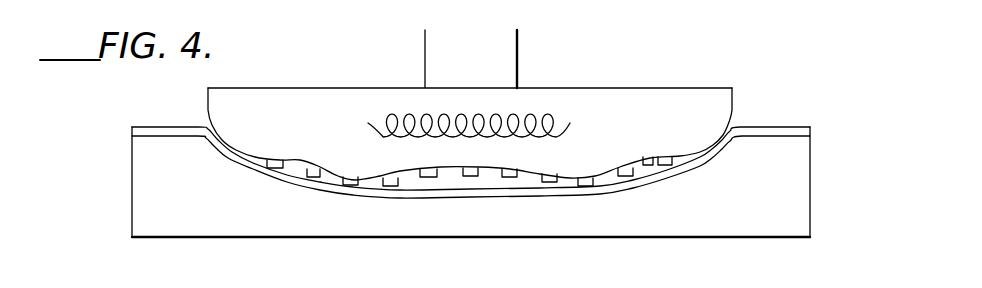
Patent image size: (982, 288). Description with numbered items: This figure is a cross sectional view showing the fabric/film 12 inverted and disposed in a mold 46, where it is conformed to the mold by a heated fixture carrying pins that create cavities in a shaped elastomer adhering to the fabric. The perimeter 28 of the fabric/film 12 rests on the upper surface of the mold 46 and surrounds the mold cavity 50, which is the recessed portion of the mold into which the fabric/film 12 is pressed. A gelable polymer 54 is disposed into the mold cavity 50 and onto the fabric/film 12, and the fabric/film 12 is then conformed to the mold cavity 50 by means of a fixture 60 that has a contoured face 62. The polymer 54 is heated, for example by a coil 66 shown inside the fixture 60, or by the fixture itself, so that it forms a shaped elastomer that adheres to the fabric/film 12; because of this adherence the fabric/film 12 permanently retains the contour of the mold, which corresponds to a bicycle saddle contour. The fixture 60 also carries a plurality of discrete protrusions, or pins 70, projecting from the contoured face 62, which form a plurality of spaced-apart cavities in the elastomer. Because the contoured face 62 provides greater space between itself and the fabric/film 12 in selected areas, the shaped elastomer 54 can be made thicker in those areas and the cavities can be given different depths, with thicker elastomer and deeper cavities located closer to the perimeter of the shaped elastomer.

The fabric/film 12 is at (508, 196).
The perimeter 28 is at (477, 180).
The mold 46 is at (802, 172).
The mold cavity 50 is at (636, 198).
The gelable polymer 54 is at (650, 172).
The fixture 60 is at (470, 123).
The contoured face 62 is at (470, 152).
The coil 66 is at (371, 136).
The pins 70 is at (312, 172).